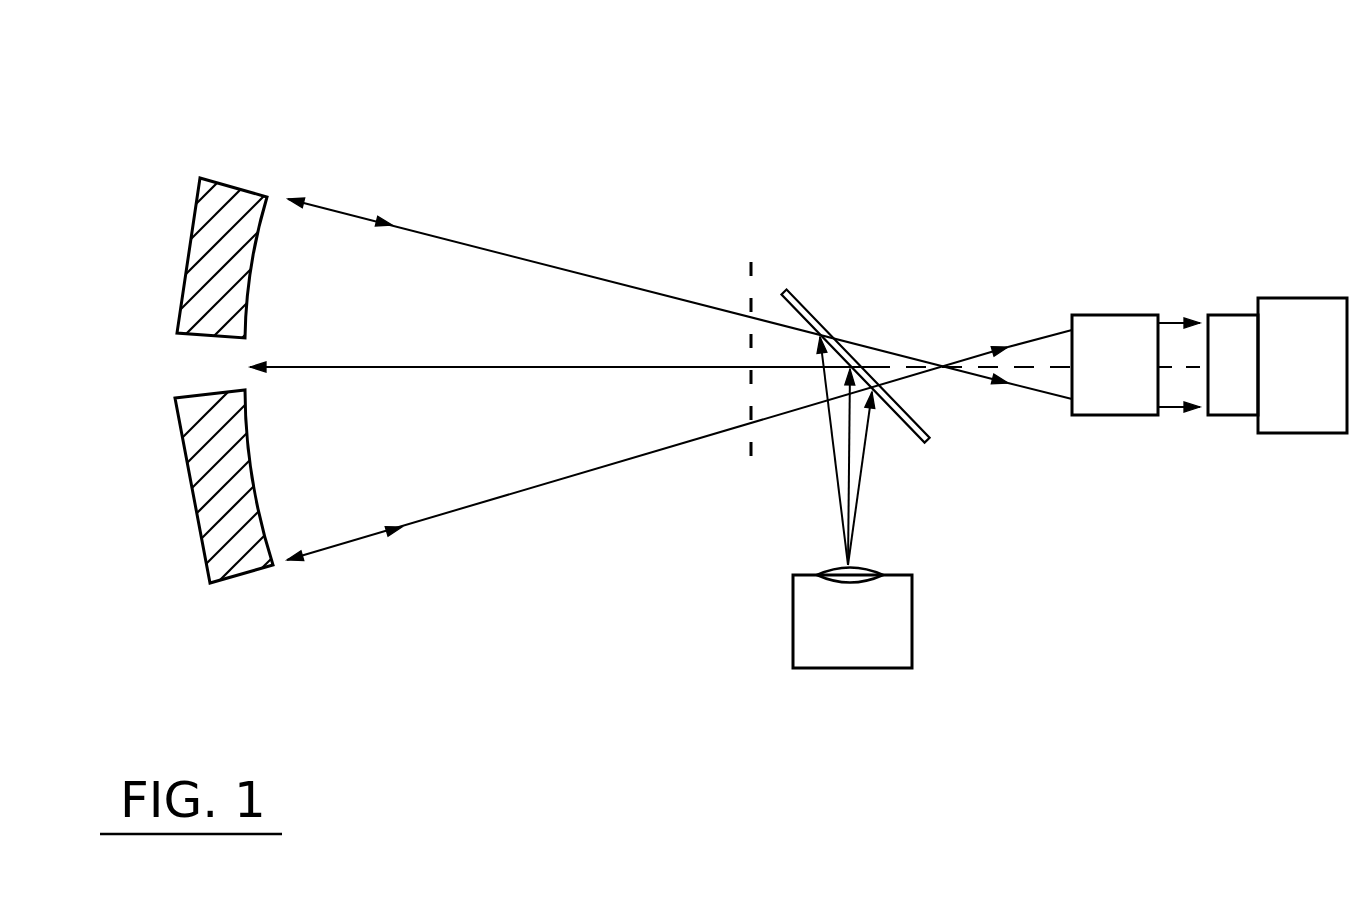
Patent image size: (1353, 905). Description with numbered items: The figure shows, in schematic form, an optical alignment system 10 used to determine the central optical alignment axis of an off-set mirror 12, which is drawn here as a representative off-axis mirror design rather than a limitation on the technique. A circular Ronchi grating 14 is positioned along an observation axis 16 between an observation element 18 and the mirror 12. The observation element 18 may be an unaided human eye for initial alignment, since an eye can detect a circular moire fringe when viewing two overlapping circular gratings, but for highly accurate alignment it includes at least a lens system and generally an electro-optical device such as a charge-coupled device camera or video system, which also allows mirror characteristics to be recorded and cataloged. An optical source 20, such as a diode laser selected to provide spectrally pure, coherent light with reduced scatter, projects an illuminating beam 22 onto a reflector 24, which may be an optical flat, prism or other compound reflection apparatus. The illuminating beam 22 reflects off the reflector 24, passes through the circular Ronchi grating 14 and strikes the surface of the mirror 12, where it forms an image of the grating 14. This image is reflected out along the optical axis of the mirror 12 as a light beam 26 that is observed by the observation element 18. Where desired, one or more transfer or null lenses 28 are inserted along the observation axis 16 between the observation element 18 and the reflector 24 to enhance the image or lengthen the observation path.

The optical alignment system 10 is at (933, 88).
The off-set mirror 12 is at (180, 251).
The circular Ronchi grating 14 is at (748, 272).
The observation axis 16 is at (893, 362).
The observation element 18 is at (1280, 365).
The optical source 20 is at (852, 618).
The illuminating beam 22 is at (290, 197).
The reflector 24 is at (917, 418).
The light beam 26 is at (388, 222).
The transfer or null lenses 28 is at (1039, 365).